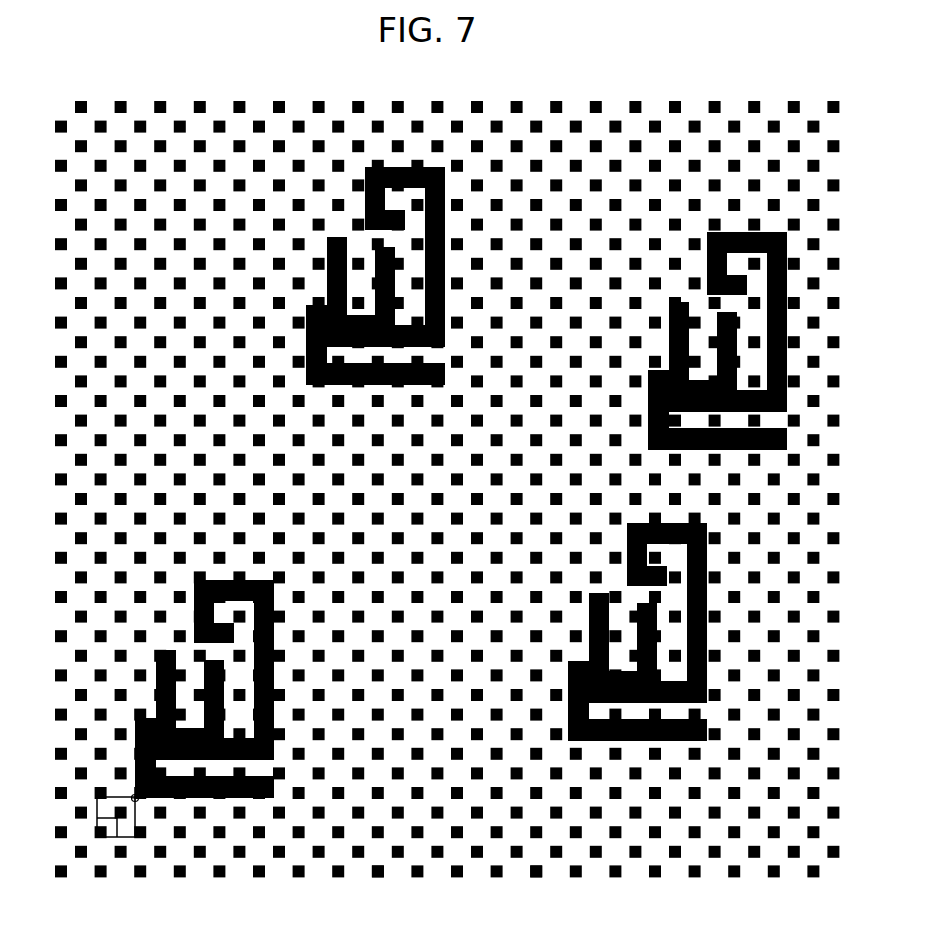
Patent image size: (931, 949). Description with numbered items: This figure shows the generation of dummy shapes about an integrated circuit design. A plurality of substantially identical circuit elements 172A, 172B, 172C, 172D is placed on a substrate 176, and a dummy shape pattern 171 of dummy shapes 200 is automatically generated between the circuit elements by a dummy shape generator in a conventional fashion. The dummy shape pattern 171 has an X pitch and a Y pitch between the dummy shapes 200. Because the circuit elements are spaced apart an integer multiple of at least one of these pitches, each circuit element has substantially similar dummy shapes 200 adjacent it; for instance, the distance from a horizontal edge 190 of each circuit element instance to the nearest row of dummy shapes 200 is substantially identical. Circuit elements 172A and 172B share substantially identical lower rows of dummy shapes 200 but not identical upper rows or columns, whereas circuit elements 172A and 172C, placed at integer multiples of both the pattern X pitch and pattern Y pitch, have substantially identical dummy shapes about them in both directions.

The substrate 176 is at (179, 108).
The dummy shapes 200 is at (380, 873).
The circuit element 172A is at (170, 798).
The circuit element 172B is at (417, 168).
The circuit element 172C is at (753, 233).
The circuit element 172D is at (603, 738).
The horizontal edge 190 is at (318, 306).
The dummy shape pattern 171 is at (120, 832).